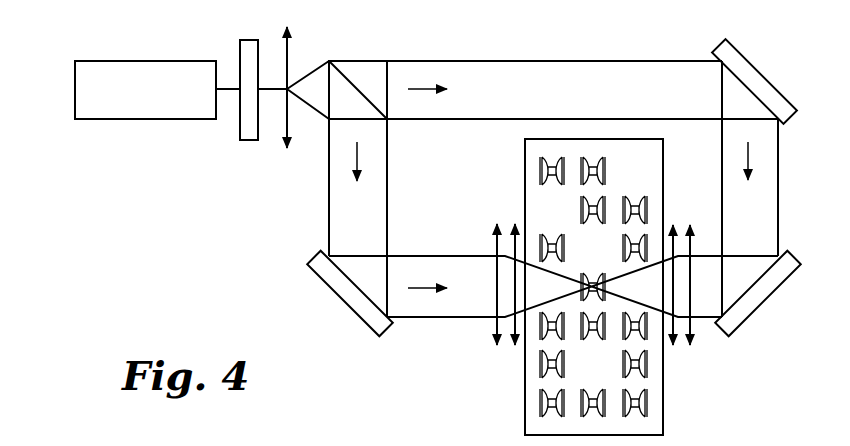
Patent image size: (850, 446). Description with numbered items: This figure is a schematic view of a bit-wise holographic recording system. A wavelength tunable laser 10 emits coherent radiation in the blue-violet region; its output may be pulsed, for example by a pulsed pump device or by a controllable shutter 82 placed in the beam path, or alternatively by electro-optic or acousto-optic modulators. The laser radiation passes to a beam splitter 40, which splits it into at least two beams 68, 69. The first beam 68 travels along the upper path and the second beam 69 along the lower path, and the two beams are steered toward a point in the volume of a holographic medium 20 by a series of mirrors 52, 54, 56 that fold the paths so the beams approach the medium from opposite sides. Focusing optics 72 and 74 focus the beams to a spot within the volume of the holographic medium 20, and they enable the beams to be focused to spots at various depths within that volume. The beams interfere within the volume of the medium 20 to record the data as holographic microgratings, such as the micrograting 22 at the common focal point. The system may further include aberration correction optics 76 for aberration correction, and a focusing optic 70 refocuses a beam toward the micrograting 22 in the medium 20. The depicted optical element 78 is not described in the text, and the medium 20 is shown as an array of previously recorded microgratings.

The wavelength tunable laser 10 is at (103, 108).
The controllable shutter 82 is at (245, 50).
The focusing optic 74 is at (285, 146).
The beam splitter 40 is at (365, 70).
The first beam 68 is at (611, 75).
The second beam 69 is at (336, 215).
The mirror 54 is at (770, 85).
The mirror 52 is at (323, 280).
The mirror 56 is at (762, 305).
The micrograting 22 is at (593, 278).
The holographic medium 20 is at (663, 405).
The focusing optic 72 is at (496, 346).
The aberration correction optics 76 is at (515, 351).
The polarization direction 78 is at (673, 350).
The focusing optic 70 is at (690, 350).